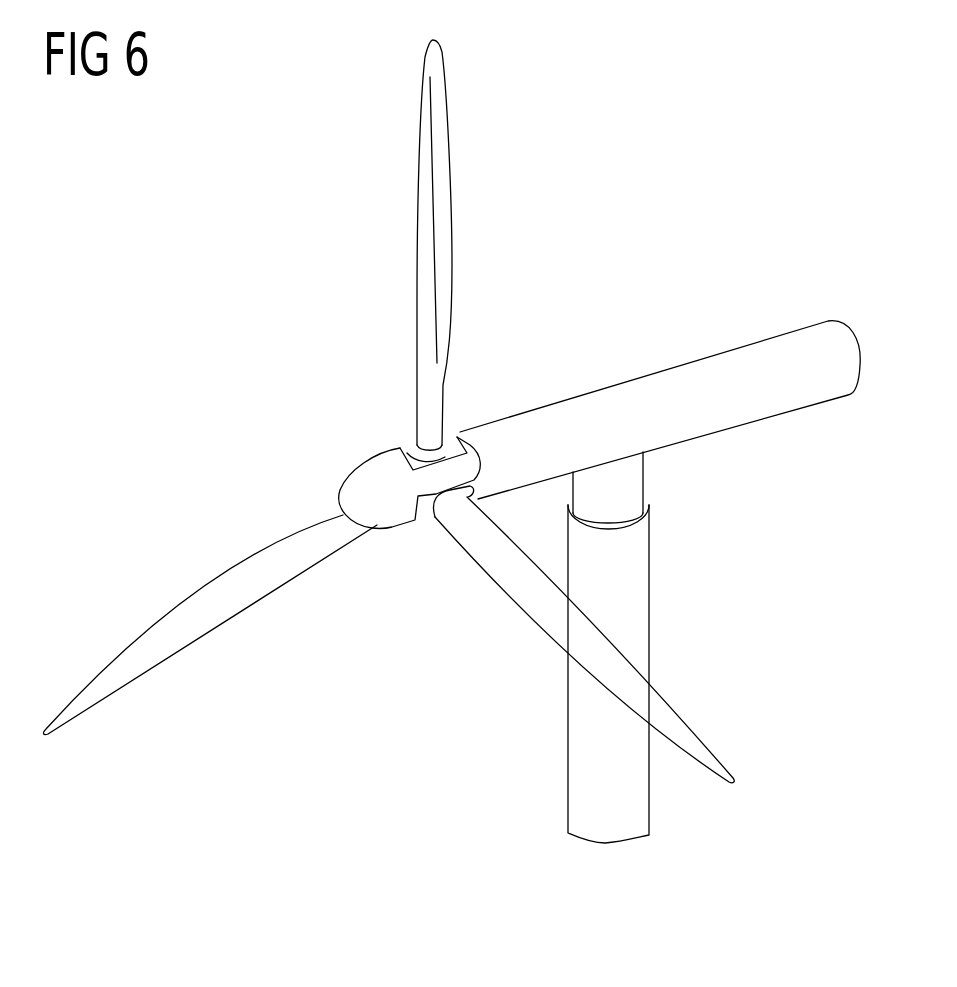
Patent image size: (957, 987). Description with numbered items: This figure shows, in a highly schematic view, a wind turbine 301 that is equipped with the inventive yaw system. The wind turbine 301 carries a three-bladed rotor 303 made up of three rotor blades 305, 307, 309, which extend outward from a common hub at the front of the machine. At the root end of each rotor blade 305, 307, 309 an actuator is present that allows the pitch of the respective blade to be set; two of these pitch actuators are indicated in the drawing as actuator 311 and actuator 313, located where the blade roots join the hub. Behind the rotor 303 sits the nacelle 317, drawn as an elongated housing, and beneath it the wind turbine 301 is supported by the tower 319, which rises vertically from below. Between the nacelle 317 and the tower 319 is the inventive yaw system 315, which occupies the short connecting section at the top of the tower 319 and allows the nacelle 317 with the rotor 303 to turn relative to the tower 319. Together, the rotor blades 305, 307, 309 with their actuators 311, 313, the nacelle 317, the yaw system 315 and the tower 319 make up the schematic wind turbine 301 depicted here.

The wind turbine 301 is at (787, 569).
The three-bladed rotor 303 is at (222, 378).
The rotor blade 305 is at (433, 290).
The rotor blade 307 is at (682, 728).
The rotor blade 309 is at (235, 605).
The actuator 311 is at (418, 523).
The actuator 313 is at (410, 449).
The yaw system 315 is at (630, 477).
The nacelle 317 is at (755, 352).
The tower 319 is at (640, 570).